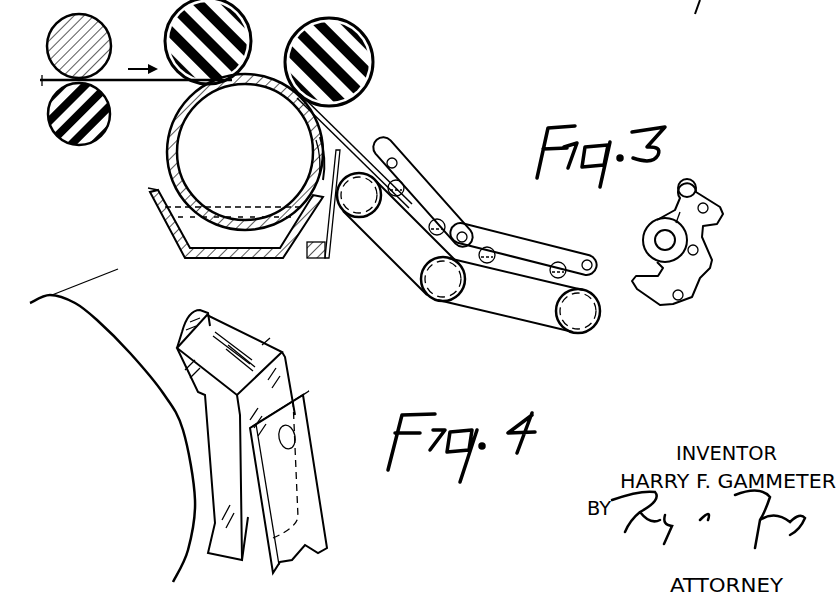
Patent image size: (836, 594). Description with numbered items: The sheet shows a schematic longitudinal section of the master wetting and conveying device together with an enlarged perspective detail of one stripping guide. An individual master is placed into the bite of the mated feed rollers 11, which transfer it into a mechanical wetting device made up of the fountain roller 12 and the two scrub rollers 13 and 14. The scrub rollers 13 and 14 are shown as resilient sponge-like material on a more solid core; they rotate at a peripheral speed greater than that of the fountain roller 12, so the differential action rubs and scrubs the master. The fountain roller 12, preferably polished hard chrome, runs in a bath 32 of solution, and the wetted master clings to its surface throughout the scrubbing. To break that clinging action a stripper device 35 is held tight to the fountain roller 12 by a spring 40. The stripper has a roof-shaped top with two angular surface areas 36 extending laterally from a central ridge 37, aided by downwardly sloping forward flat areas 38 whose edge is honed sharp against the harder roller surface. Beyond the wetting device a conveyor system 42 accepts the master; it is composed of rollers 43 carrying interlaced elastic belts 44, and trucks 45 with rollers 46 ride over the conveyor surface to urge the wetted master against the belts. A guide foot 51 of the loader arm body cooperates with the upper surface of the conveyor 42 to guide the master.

In FIG. 3, the feed rollers 11 is at (96, 26).
In FIG. 3, the fountain roller 12 is at (176, 120).
In FIG. 3, the scrub roller 13 is at (247, 28).
In FIG. 3, the scrub roller 14 is at (370, 54).
In FIG. 3, the bath 32 is at (187, 230).
In FIG. 4, the stripper device 35 is at (246, 424).
In FIG. 4, the angular surface areas 36 is at (252, 338).
In FIG. 4, the central ridge 37 is at (216, 326).
In FIG. 4, the forward flat areas 38 is at (184, 326).
In FIG. 4, the spring 40 is at (312, 526).
In FIG. 3, the conveyor system 42 is at (476, 266).
In FIG. 3, the rollers 43 is at (438, 288).
In FIG. 3, the elastic belts 44 is at (548, 324).
In FIG. 3, the trucks 45 is at (540, 248).
In FIG. 3, the rollers 46 is at (491, 252).
In FIG. 3, the guide foot 51 is at (635, 276).